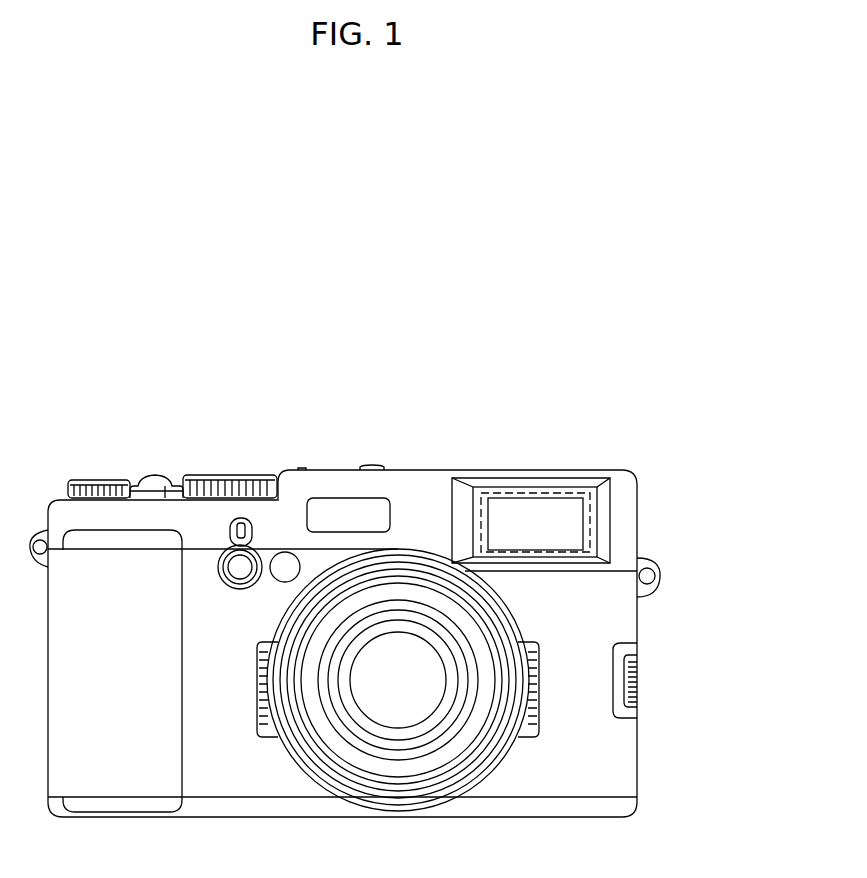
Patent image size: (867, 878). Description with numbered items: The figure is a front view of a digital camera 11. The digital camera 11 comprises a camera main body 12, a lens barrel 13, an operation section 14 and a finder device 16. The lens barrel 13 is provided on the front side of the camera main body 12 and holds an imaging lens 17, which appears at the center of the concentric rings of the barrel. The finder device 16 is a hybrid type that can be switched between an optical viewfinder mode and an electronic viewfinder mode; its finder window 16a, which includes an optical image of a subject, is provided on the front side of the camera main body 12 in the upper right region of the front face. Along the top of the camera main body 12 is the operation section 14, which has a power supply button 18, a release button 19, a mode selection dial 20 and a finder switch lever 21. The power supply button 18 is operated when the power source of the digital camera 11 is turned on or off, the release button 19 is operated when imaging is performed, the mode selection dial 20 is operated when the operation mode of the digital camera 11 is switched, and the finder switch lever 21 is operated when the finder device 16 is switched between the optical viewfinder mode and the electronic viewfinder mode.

The digital camera 11 is at (623, 452).
The camera main body 12 is at (638, 738).
The lens barrel 13 is at (473, 787).
The operation section 14 is at (295, 410).
The finder device 16 is at (528, 492).
The finder window 16a is at (568, 525).
The imaging lens 17 is at (387, 705).
The power supply button 18 is at (143, 492).
The release button 19 is at (155, 476).
The mode selection dial 20 is at (227, 474).
The finder switch lever 21 is at (244, 518).